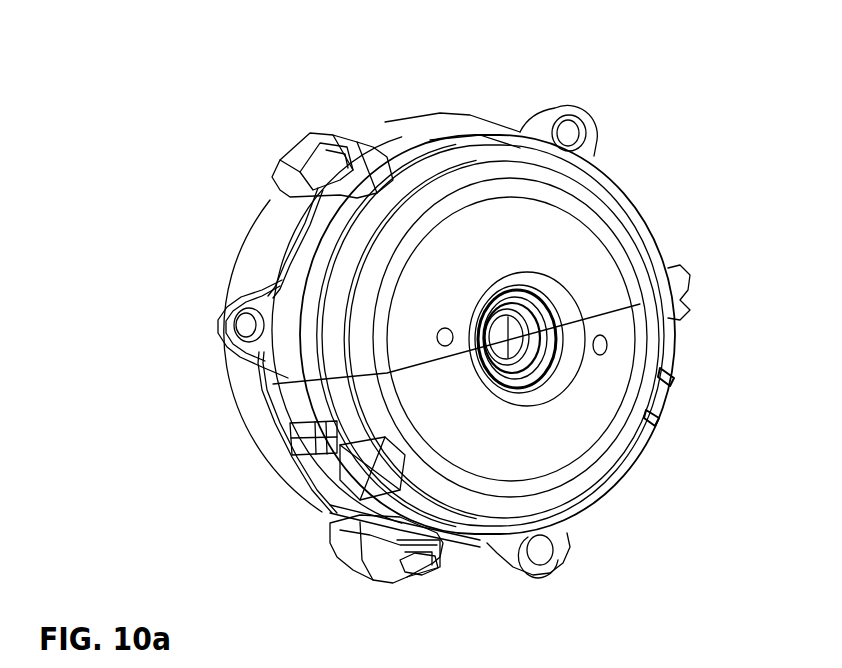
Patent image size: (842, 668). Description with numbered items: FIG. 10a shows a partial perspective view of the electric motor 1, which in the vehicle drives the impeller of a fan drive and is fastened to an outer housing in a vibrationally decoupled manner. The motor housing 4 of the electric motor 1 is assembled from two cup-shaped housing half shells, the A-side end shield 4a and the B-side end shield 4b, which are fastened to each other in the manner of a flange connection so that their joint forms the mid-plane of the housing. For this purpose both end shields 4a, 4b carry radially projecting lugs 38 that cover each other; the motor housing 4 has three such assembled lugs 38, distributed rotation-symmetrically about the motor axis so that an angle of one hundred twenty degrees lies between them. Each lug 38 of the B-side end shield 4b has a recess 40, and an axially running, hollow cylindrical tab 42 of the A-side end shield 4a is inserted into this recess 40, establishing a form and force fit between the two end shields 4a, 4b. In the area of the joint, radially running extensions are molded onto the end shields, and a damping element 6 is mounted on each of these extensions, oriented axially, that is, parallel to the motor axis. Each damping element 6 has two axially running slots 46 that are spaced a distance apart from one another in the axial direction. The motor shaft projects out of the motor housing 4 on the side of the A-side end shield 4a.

The electric motor 1 is at (518, 216).
The motor housing 4 is at (299, 100).
The A-side end shield 4a is at (596, 253).
The B-side end shield 4b is at (252, 420).
The damping element 6 is at (274, 180).
The lug 38 is at (264, 293).
The recess 40 is at (588, 122).
The tab 42 is at (252, 343).
The slot 46 is at (406, 563).